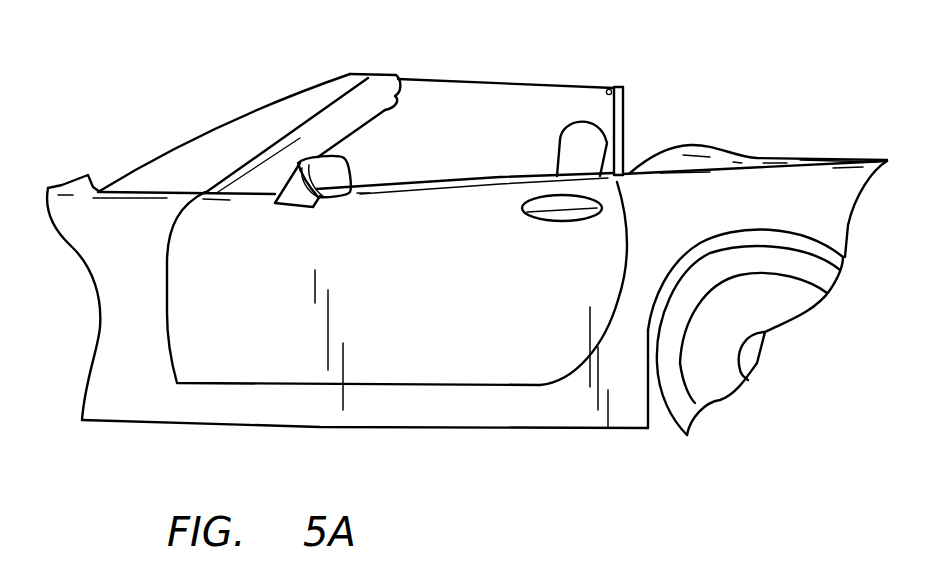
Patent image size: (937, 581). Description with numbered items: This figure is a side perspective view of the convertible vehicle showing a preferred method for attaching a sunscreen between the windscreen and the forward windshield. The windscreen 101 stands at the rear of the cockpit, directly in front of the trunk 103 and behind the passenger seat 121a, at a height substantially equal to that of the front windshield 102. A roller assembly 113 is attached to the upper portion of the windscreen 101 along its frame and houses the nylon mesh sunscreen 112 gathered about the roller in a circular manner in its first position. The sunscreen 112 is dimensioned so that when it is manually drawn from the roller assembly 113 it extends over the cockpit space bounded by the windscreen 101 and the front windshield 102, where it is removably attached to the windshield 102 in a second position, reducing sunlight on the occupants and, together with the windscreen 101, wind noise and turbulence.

The windscreen 101 is at (625, 104).
The front windshield 102 is at (397, 79).
The trunk 103 is at (776, 151).
The mesh sunscreen 112 is at (522, 83).
The roller assembly 113 is at (613, 86).
The passenger seat 121a is at (558, 123).